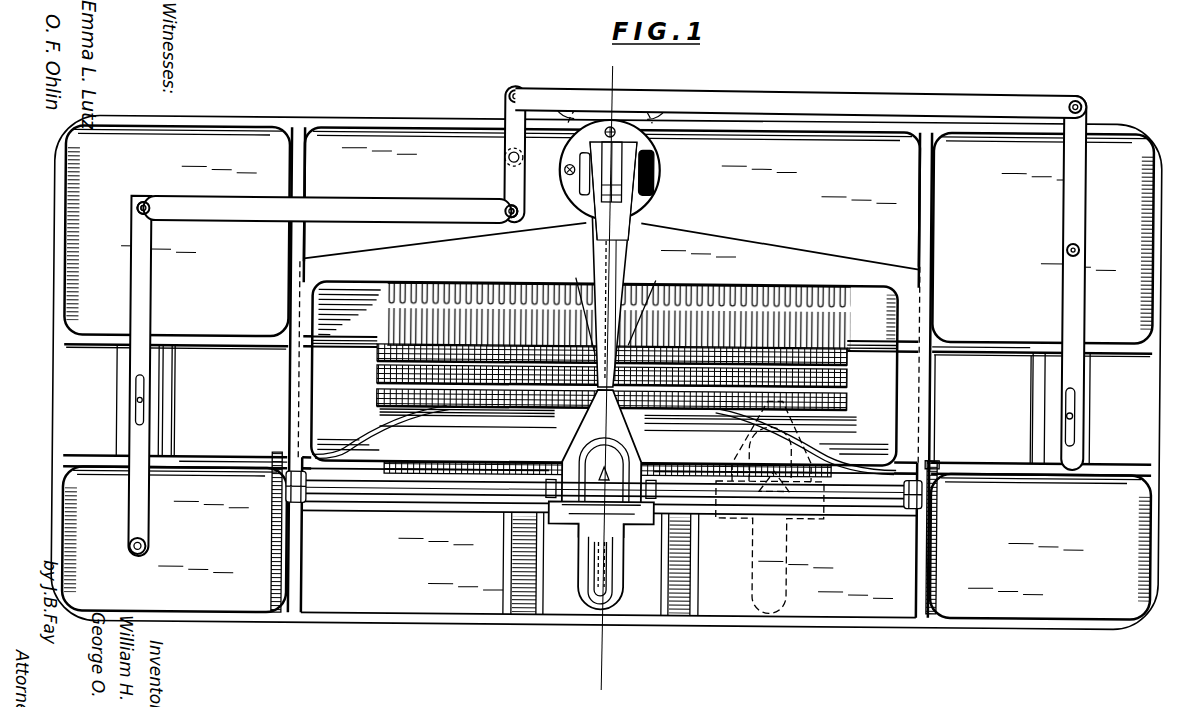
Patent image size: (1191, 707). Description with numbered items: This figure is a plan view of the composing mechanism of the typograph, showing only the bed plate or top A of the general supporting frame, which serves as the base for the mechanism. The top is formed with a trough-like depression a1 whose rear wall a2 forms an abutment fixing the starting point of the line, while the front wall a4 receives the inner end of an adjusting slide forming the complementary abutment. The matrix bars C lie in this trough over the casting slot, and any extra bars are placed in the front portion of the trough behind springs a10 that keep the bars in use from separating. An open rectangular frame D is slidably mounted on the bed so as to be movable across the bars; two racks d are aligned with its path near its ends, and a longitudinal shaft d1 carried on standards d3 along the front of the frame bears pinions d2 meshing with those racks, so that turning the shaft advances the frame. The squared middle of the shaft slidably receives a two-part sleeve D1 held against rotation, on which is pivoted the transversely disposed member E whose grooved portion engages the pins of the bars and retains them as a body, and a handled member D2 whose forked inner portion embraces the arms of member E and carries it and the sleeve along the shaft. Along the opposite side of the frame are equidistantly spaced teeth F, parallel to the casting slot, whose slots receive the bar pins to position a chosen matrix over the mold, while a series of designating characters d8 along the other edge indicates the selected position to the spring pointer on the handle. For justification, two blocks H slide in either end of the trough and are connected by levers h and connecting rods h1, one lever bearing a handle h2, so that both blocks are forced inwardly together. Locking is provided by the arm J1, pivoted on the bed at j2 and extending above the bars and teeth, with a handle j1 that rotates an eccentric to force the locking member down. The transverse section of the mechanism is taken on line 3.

The bed plate or top A is at (395, 124).
The blocks H is at (117, 406).
The levers h is at (150, 292).
The connecting rods h1 is at (402, 214).
The handle h2 is at (138, 559).
The pivot of arm J' j2 is at (580, 168).
The arm J1 is at (592, 250).
The handle j1 is at (604, 306).
The teeth F is at (748, 290).
The matrix bars C is at (377, 382).
The open frame D is at (314, 428).
The two-part sleeve D1 is at (628, 478).
The handled member D2 is at (615, 570).
The transversely disposed member E is at (566, 432).
The trough-like depression a1 is at (982, 409).
The rear wall of the trough a2 is at (990, 348).
The front wall of the trough a4 is at (252, 458).
The springs a10 is at (372, 425).
The racks d is at (273, 462).
The longitudinal shaft d1 is at (372, 499).
The pinions d2 is at (938, 502).
The standards d3 is at (300, 505).
The designating characters d8 is at (607, 452).
The section line 3— 3 is at (595, 688).